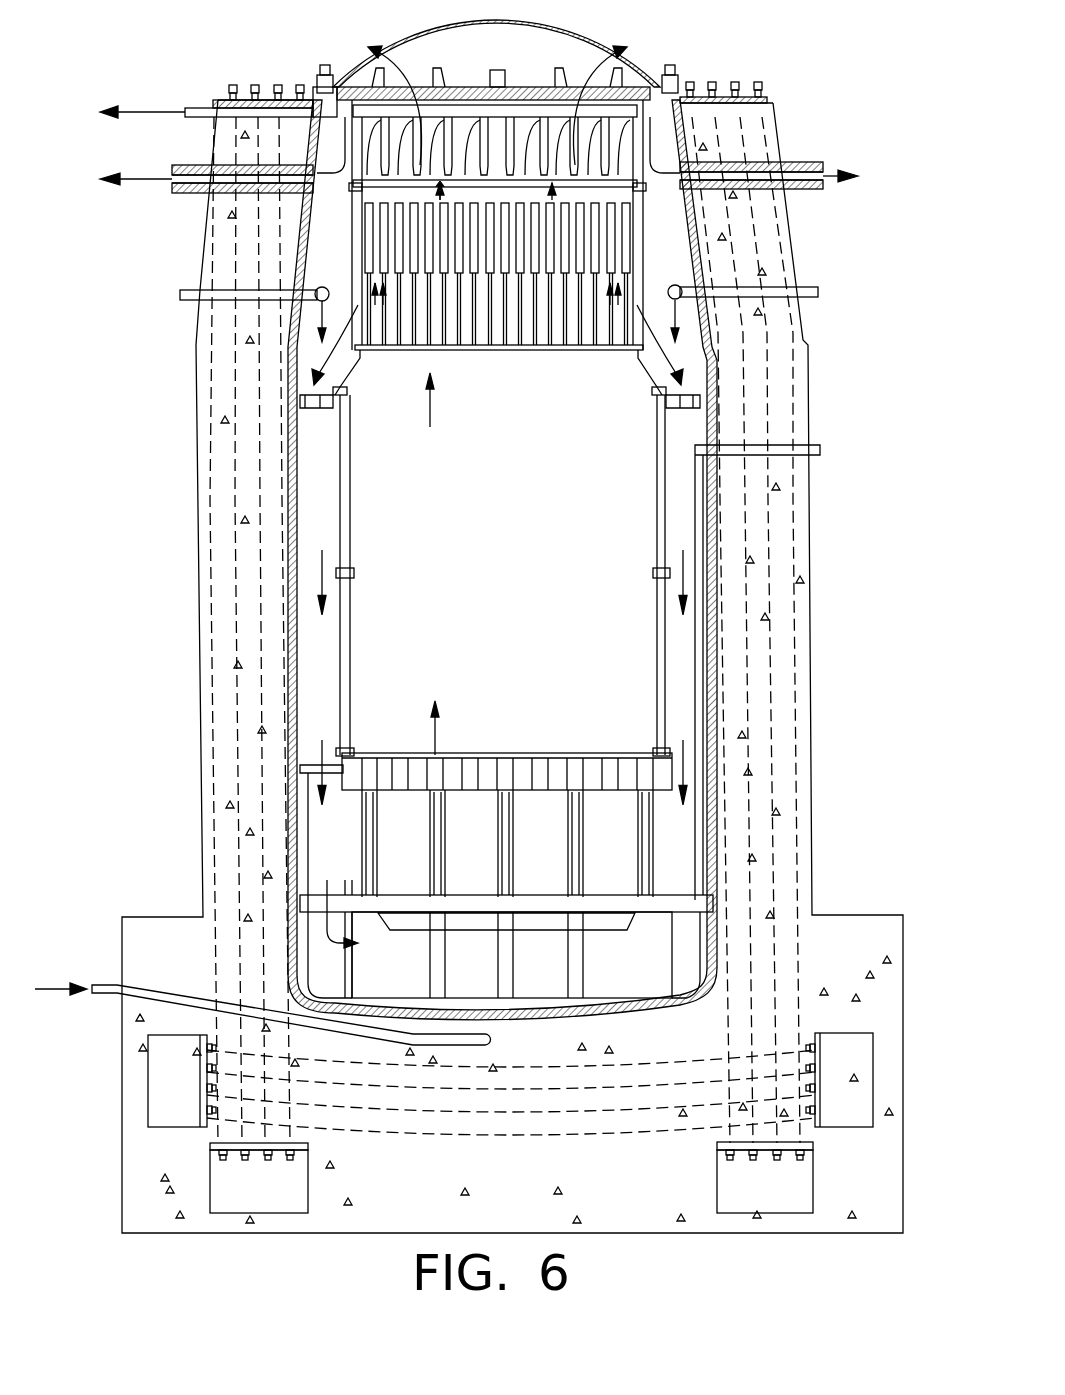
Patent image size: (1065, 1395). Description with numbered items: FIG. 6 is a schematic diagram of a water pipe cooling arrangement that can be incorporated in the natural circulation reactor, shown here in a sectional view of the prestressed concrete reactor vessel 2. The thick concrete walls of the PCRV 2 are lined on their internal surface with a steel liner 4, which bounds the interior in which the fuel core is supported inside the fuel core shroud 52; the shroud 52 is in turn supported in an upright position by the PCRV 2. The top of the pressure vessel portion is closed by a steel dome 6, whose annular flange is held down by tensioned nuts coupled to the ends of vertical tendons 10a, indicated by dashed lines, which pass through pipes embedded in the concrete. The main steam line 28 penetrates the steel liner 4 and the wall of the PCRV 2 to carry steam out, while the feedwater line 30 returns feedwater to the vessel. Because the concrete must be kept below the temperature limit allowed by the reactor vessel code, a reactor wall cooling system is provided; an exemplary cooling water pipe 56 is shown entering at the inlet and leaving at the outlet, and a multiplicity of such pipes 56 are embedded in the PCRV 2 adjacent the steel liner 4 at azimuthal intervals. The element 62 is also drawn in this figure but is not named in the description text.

The prestressed concrete reactor vessel 2 is at (193, 539).
The steel liner 4 is at (297, 583).
The steel dome 6 is at (603, 40).
The vertical tendons 10a is at (772, 672).
The main steam line 28 is at (193, 167).
The feedwater line 30 is at (190, 290).
The fuel core shroud 52 is at (350, 662).
The cooling water pipe 56 is at (202, 107).
The pipe fitting 62 is at (316, 288).